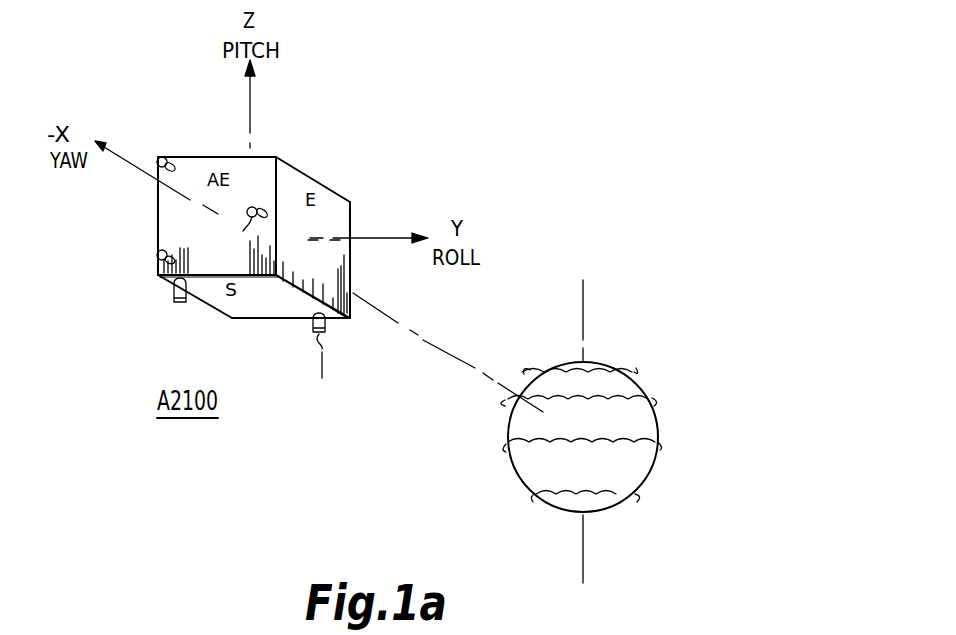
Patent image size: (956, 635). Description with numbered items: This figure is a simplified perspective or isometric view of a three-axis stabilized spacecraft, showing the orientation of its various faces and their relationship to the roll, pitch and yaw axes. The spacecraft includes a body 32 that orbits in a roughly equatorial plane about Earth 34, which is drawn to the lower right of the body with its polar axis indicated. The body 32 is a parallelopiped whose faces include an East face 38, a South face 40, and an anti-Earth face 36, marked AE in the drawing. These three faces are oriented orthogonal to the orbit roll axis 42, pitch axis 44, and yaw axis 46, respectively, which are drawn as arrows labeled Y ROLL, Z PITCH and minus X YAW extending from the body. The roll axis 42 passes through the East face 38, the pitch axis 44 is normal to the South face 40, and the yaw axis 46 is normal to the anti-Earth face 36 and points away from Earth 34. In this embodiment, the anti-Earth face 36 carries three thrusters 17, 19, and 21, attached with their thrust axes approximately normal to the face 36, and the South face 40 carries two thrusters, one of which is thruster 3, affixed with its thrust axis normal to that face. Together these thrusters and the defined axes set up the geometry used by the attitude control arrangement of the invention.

The thruster 3 is at (180, 305).
The thruster 17 is at (162, 157).
The thruster 19 is at (252, 237).
The thruster 21 is at (157, 257).
The body 32 is at (323, 183).
The Earth 34 is at (508, 437).
The anti-Earth face 36 is at (158, 213).
The East face 38 is at (350, 270).
The South face 40 is at (276, 319).
The roll axis 42 is at (388, 238).
The pitch axis 44 is at (251, 113).
The yaw axis 46 is at (127, 161).